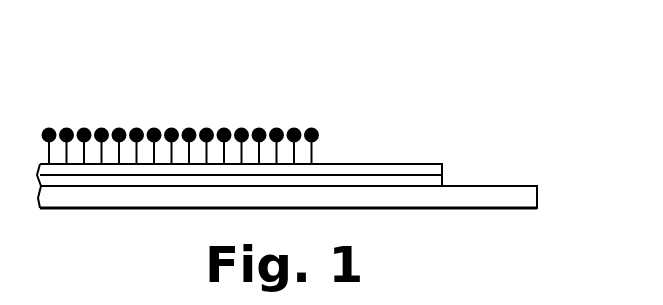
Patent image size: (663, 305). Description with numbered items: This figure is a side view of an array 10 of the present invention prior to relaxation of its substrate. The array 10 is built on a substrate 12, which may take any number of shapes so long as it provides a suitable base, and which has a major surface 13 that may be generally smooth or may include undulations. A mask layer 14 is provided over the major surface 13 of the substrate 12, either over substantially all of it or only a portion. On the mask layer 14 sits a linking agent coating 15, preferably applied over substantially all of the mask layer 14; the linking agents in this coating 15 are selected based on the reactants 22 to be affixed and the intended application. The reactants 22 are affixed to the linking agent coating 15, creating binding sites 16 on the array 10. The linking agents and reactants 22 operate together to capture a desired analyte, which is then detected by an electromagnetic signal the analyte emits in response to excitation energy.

The array 10 is at (452, 73).
The substrate 12 is at (78, 198).
The major surface 13 is at (505, 186).
The mask layer 14 is at (404, 183).
The linking agent coating 15 is at (362, 170).
The binding sites 16 is at (317, 52).
The reactants 22 is at (276, 128).